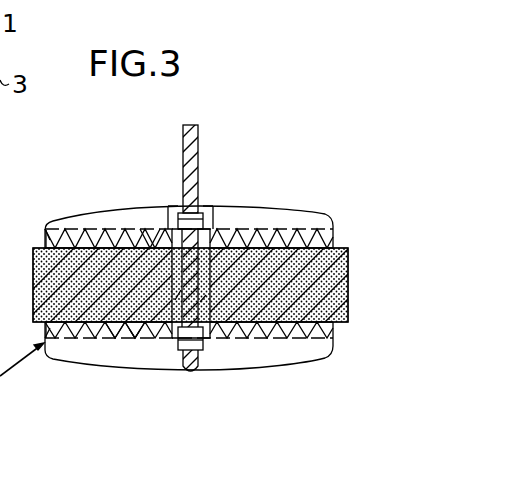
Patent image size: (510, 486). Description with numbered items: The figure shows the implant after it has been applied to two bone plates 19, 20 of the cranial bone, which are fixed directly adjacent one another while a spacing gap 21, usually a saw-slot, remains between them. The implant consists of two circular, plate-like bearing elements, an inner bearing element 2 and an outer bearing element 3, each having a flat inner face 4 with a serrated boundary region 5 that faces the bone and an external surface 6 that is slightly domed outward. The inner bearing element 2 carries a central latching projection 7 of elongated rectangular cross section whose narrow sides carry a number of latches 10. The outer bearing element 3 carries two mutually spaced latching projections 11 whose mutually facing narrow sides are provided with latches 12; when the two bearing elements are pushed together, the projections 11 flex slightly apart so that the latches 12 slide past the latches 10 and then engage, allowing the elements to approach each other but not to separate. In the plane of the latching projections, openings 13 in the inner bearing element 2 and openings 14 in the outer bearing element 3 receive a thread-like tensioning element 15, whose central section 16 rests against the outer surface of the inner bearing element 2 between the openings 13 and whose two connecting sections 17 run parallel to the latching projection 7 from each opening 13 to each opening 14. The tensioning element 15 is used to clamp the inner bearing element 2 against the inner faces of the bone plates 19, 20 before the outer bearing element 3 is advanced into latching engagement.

The inner bearing element 2 is at (318, 357).
The outer bearing element 3 is at (314, 214).
The inner face 4 is at (84, 245).
The serrated boundary region 5 is at (47, 236).
The external surface 6 is at (166, 212).
The latching projection 7 is at (182, 278).
The latch 10 is at (136, 340).
The latching projection 11 is at (166, 276).
The latch 12 is at (135, 334).
The opening 13 is at (219, 340).
The opening 14 is at (205, 220).
The tensioning element 15 is at (196, 128).
The central section 16 is at (193, 375).
The connecting section 17 is at (150, 247).
The bone plate 19 is at (118, 318).
The bone plate 20 is at (349, 258).
The spacing gap 21 is at (205, 282).